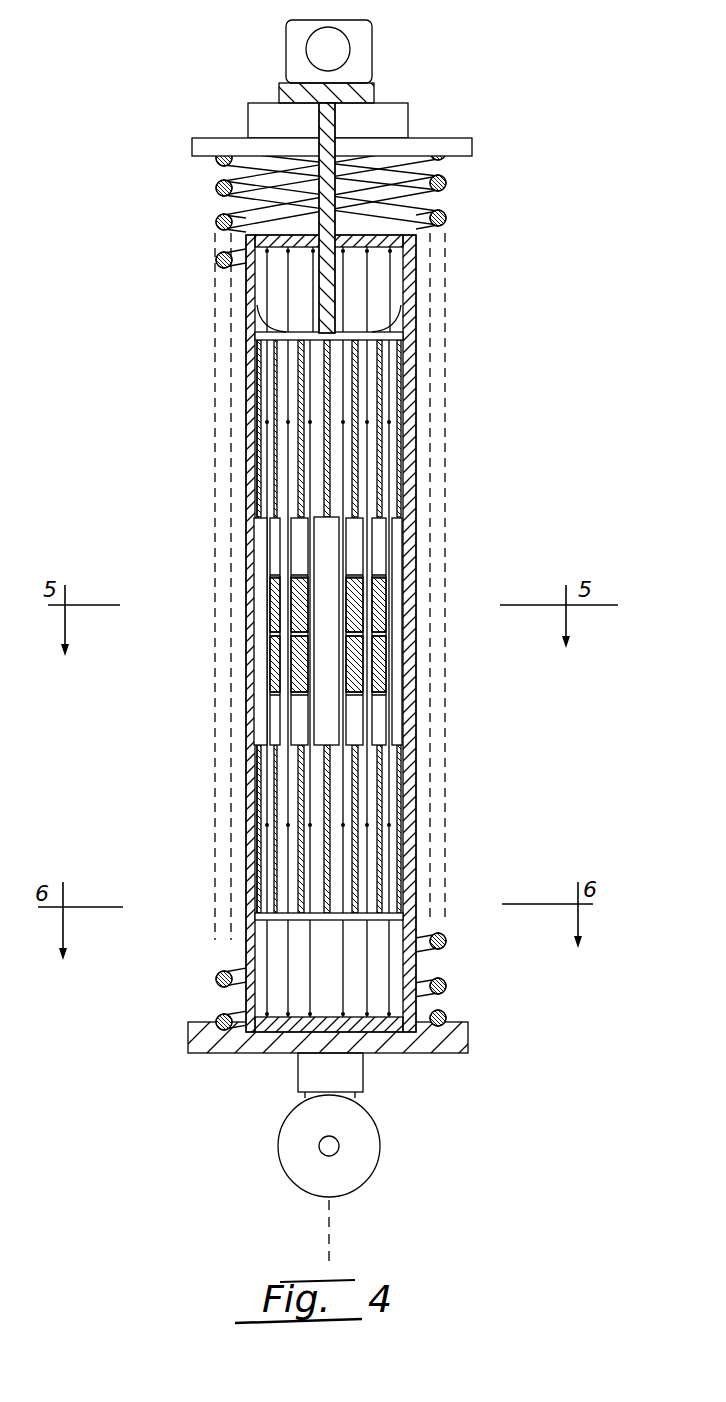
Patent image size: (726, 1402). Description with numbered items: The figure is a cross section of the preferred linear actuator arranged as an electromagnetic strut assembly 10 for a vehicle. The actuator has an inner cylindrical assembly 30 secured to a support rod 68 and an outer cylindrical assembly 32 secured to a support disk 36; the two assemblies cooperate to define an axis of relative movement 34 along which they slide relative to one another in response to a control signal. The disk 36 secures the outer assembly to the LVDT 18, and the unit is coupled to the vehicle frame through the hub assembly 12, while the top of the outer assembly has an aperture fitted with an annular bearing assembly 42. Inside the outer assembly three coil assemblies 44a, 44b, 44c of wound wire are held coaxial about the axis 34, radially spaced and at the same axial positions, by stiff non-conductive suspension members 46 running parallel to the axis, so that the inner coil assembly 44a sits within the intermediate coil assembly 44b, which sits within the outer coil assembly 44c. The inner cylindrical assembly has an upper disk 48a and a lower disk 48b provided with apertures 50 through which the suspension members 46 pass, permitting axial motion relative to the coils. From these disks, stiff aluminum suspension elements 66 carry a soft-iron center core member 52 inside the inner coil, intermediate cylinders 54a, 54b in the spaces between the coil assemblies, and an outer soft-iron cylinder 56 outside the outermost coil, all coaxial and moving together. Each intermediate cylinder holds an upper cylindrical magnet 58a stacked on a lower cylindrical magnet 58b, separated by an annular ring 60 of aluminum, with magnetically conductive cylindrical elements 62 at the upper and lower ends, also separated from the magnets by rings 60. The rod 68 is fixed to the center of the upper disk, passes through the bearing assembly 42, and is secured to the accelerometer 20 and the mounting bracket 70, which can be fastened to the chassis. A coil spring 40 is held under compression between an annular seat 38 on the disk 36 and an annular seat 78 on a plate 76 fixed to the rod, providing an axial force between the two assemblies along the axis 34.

The strut assembly 10 is at (362, 632).
The hub assembly 12 is at (381, 1147).
The LVDT 18 is at (365, 1072).
The accelerometer 20 is at (408, 110).
The inner cylindrical assembly 30 is at (417, 690).
The outer cylindrical assembly 32 is at (252, 355).
The axis of relative movement 34 is at (331, 1233).
The support disk 36 is at (457, 1053).
The annular seat 38 is at (219, 1016).
The coil spring 40 is at (446, 183).
The annular bearing assembly 42 is at (317, 238).
The inner coil assembly 44a is at (310, 450).
The intermediate coil assembly 44b is at (367, 440).
The outer coil assembly 44c is at (393, 470).
The suspension members 46 is at (352, 280).
The upper disk 48a is at (380, 330).
The lower disk 48b is at (378, 934).
The apertures 50 is at (283, 332).
The center core member 52 is at (325, 532).
The intermediate cylinder 54a is at (355, 530).
The intermediate cylinder 54b is at (378, 540).
The outer cylinder 56 is at (400, 575).
The upper cylindrical magnet 58a is at (272, 583).
The lower cylindrical magnet 58b is at (272, 654).
The annular ring 60 is at (278, 568).
The cylindrical elements 62 is at (275, 538).
The suspension elements 66 is at (273, 371).
The support rod 68 is at (323, 187).
The mounting bracket 70 is at (373, 38).
The plate 76 is at (472, 140).
The annular seat 78 is at (217, 153).